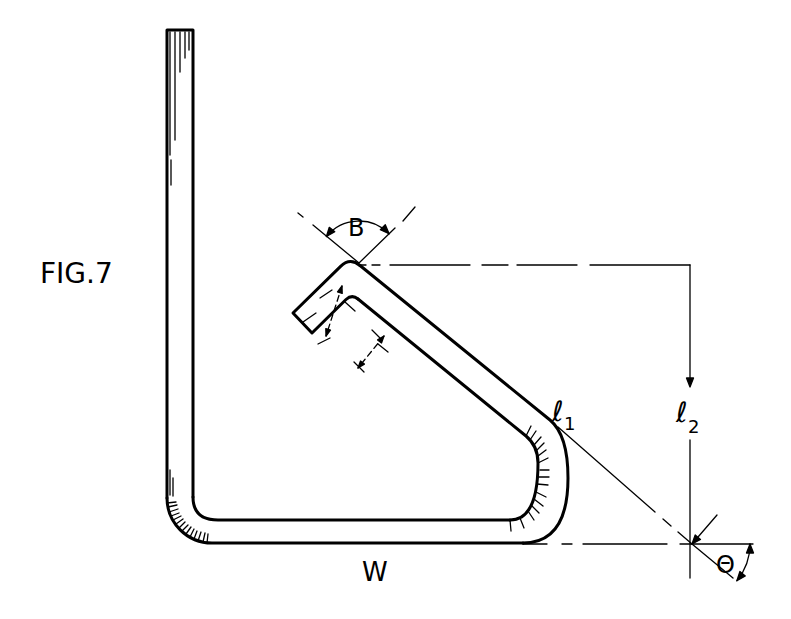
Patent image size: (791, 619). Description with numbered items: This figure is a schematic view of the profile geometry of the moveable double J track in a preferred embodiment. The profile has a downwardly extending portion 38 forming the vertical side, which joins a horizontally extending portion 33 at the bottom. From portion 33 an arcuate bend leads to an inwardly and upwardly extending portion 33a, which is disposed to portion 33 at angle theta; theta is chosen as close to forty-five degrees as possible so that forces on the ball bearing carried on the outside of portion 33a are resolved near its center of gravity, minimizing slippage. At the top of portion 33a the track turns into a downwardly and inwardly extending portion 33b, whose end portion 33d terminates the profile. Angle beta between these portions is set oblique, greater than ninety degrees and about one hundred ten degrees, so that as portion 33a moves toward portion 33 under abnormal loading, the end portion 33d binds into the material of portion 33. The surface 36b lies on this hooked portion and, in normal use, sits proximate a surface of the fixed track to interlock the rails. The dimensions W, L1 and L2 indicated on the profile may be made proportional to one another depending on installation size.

The downwardly extending portion 38 is at (182, 207).
The horizontally extending portion 33 is at (300, 530).
The inwardly and upwardly extending portion 33a is at (450, 348).
The downwardly and inwardly extending portion 33b is at (325, 291).
The end portion 33d is at (312, 320).
The surface 36b is at (345, 316).